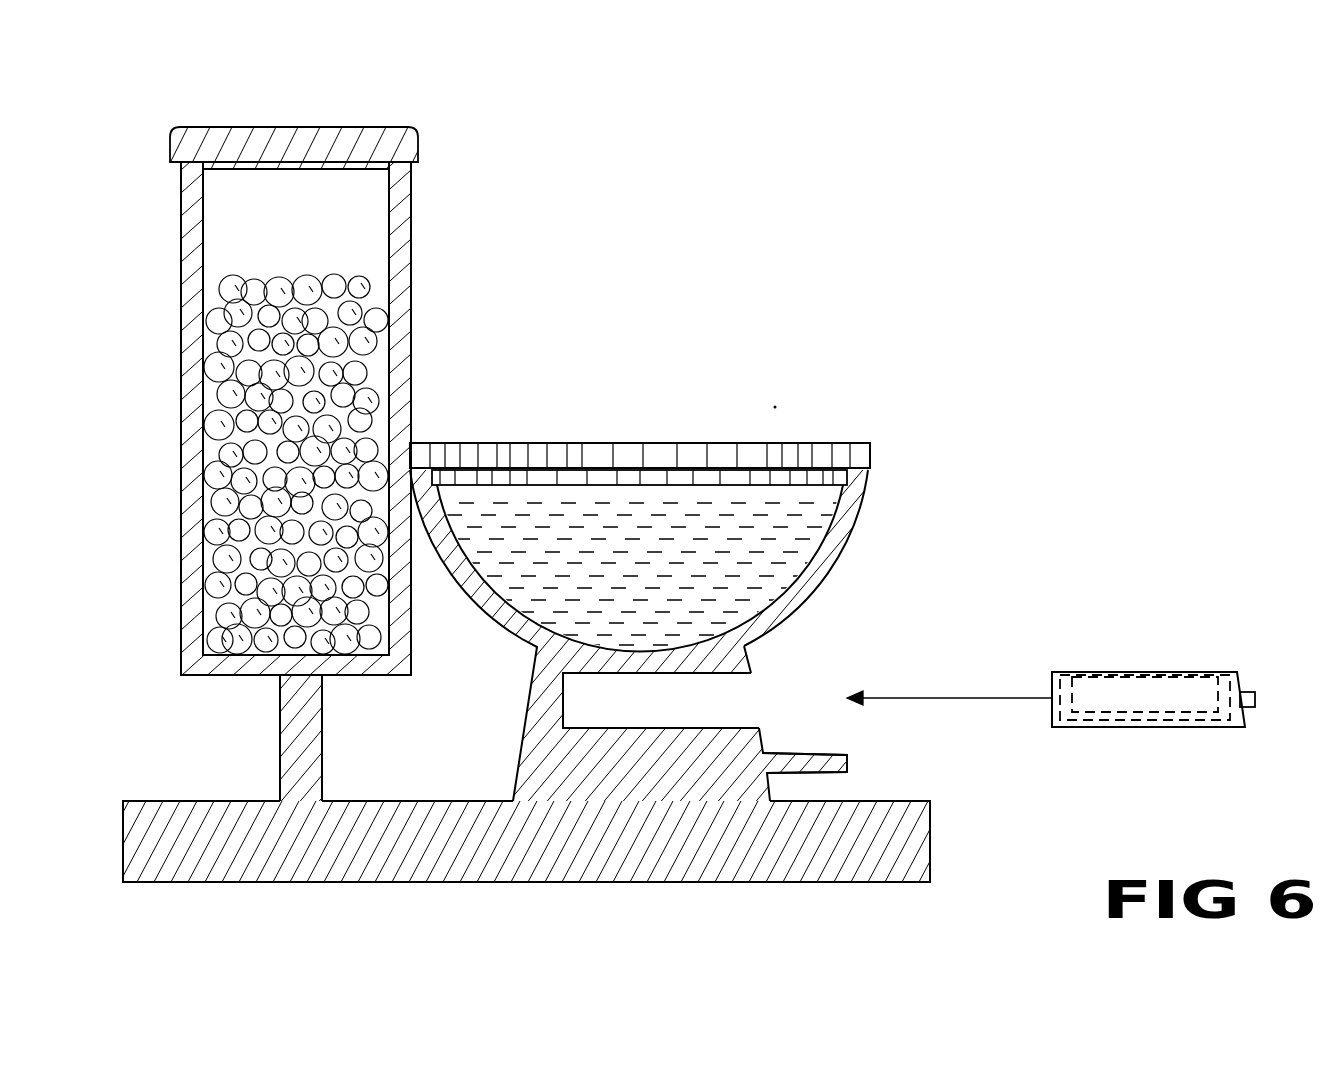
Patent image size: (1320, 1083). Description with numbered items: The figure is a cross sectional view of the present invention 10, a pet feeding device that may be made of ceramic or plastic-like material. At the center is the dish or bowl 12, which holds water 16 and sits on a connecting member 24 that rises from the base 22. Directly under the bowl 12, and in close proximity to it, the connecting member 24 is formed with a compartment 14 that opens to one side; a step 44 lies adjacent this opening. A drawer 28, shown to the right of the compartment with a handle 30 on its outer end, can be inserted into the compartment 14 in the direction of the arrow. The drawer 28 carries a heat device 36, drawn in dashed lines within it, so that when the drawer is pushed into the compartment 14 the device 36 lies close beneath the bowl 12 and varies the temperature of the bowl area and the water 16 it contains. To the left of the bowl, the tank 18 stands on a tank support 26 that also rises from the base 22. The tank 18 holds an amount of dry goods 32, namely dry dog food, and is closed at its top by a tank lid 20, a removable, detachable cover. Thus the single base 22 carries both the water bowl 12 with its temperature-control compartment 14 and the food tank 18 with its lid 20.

The present invention 10 is at (775, 270).
The dish or bowl 12 is at (852, 510).
The compartment 14 is at (730, 695).
The water 16 is at (787, 553).
The tank 18 is at (402, 235).
The tank lid 20 is at (365, 140).
The base 22 is at (905, 847).
The connecting member 24 is at (543, 710).
The tank support 26 is at (303, 737).
The drawer 28 is at (1232, 673).
The handle 30 is at (1253, 700).
The dry goods 32 is at (390, 368).
The heat device 36 is at (1107, 692).
The step 44 is at (813, 763).